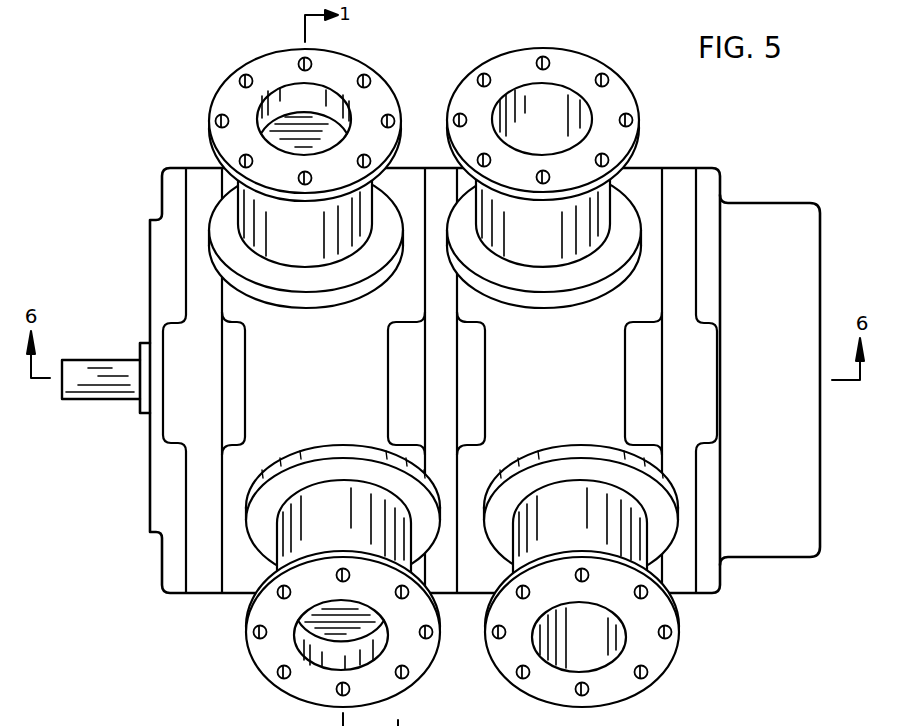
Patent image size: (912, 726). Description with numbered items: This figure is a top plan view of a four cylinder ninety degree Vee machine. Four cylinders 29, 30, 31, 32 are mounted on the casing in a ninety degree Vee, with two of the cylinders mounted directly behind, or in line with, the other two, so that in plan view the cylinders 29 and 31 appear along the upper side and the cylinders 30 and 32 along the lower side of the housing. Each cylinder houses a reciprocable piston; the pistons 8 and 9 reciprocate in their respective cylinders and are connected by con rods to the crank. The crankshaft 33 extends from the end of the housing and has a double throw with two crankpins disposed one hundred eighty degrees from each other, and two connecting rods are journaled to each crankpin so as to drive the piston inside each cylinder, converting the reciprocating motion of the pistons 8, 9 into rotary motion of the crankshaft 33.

The piston 8 is at (278, 128).
The piston 9 is at (318, 628).
The cylinder 29 is at (291, 167).
The cylinder 30 is at (335, 576).
The cylinder 31 is at (463, 100).
The cylinder 32 is at (647, 662).
The crankshaft 33 is at (102, 373).